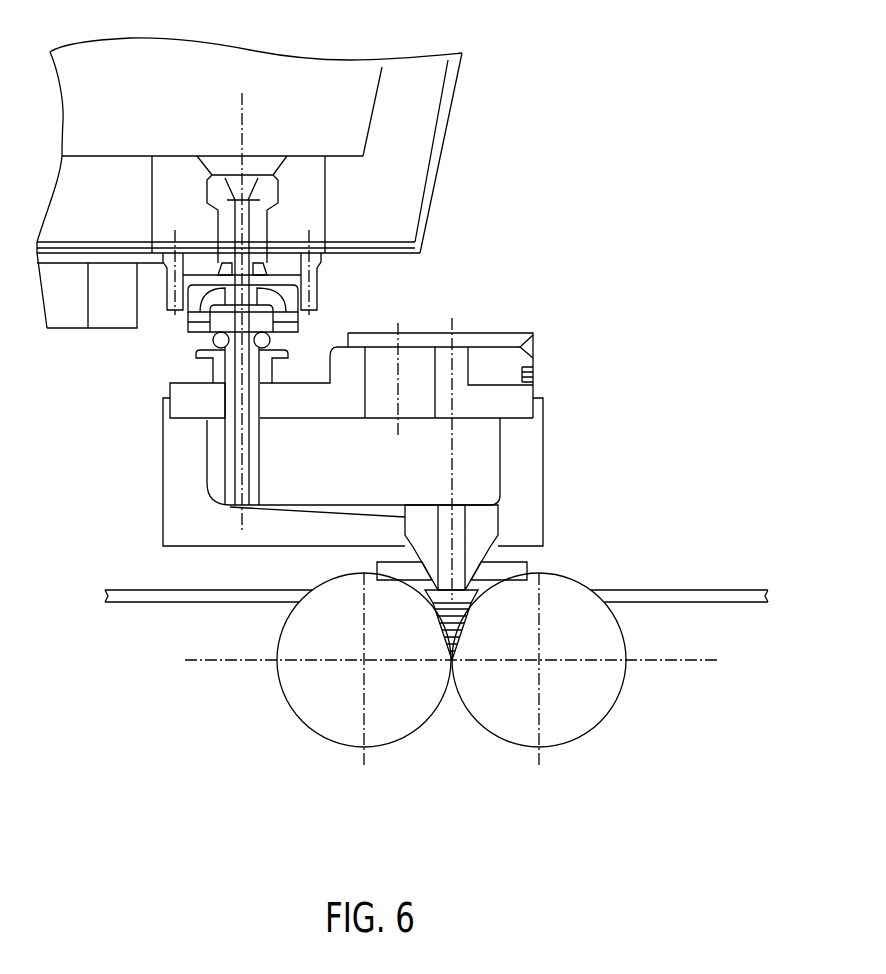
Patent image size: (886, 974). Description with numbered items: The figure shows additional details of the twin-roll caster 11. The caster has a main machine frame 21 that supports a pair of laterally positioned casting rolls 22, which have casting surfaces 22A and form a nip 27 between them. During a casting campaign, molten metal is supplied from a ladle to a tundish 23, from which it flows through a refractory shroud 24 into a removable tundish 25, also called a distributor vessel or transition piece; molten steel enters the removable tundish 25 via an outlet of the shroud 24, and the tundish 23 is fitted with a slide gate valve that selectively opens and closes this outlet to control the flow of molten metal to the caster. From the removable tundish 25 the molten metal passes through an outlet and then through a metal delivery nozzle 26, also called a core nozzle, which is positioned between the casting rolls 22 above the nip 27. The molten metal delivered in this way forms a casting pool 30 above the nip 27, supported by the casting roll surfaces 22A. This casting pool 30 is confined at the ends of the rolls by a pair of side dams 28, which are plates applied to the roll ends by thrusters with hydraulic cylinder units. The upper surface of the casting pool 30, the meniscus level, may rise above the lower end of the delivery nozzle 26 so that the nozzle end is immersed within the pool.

The twin-roll caster 11 is at (683, 500).
The main machine frame 21 is at (698, 590).
The casting rolls 22 is at (605, 717).
The casting surfaces 22A is at (473, 600).
The tundish 23 is at (428, 208).
The refractory shroud 24 is at (260, 450).
The removable tundish 25 is at (163, 465).
The metal delivery nozzle 26 is at (492, 560).
The nip 27 is at (455, 658).
The side dams 28 is at (423, 592).
The casting pool 30 is at (440, 617).